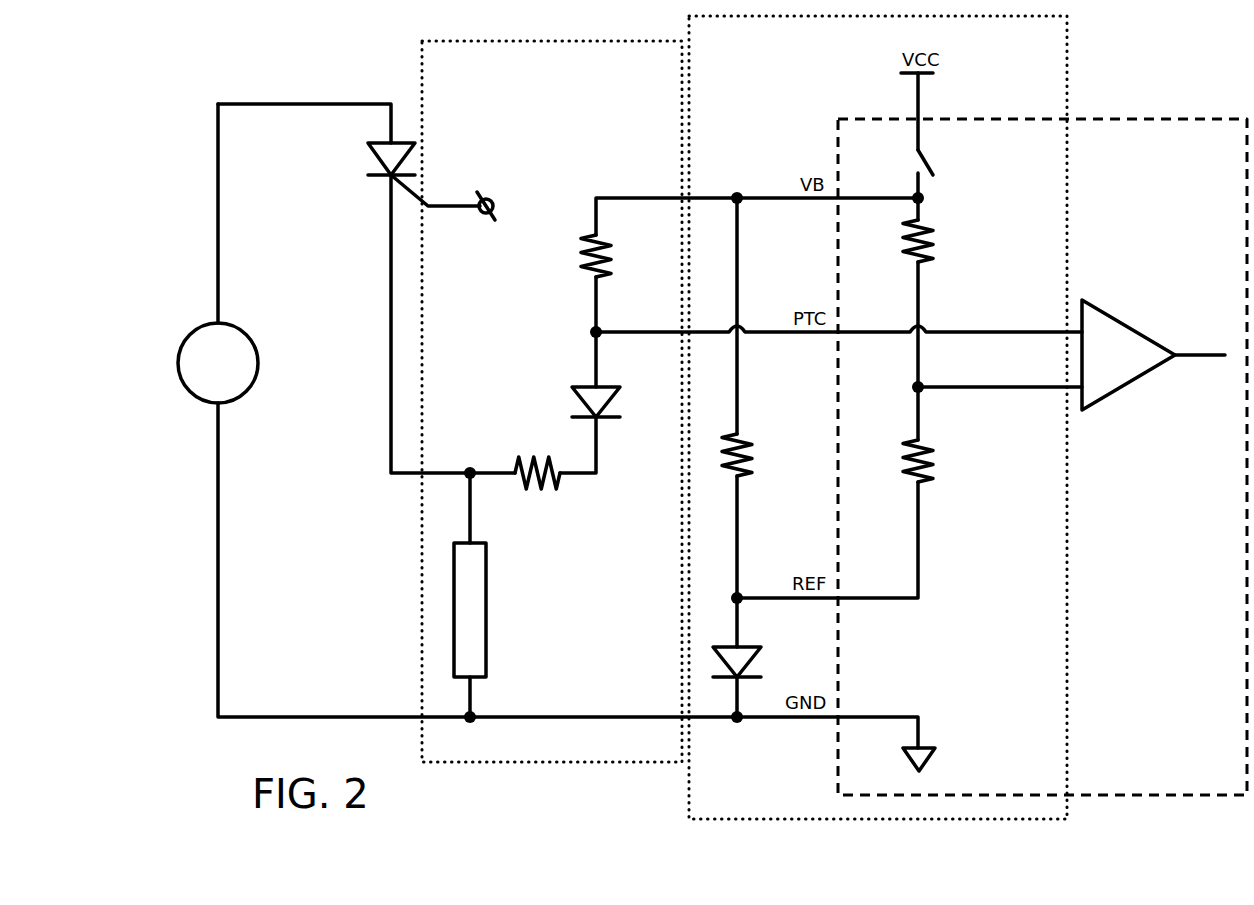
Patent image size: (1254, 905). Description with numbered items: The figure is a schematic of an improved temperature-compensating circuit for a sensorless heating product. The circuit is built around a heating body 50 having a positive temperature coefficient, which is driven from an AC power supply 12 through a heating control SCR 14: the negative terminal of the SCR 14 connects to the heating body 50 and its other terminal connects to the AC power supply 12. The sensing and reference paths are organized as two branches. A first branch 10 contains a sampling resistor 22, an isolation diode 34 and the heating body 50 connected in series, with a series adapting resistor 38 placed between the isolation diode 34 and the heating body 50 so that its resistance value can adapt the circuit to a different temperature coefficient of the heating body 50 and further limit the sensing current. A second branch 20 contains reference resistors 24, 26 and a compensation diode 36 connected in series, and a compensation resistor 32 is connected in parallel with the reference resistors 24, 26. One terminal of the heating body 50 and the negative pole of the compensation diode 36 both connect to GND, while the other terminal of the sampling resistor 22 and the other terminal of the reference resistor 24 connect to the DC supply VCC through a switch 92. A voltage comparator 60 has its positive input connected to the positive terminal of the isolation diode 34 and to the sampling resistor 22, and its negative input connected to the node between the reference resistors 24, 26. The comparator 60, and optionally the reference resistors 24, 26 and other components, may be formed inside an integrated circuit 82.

The first branch 10 is at (552, 401).
The AC power supply 12 is at (249, 341).
The heating control SCR 14 is at (405, 141).
The second branch 20 is at (878, 417).
The sampling resistor 22 is at (604, 273).
The reference resistor 24 is at (926, 258).
The reference resistor 26 is at (926, 470).
The compensation resistor 32 is at (745, 470).
The isolation diode 34 is at (612, 383).
The compensation diode 36 is at (750, 645).
The series adapting resistor 38 is at (540, 485).
The heating body 50 is at (486, 620).
The voltage comparator 60 is at (1128, 355).
The integrated circuit 82 is at (1042, 457).
The switch 92 is at (927, 165).